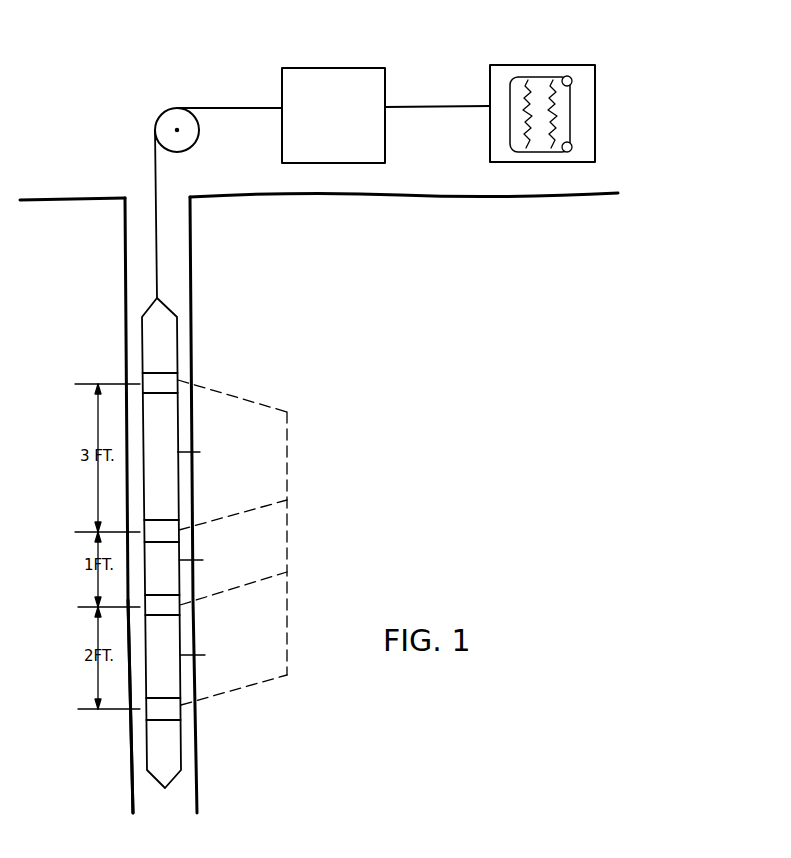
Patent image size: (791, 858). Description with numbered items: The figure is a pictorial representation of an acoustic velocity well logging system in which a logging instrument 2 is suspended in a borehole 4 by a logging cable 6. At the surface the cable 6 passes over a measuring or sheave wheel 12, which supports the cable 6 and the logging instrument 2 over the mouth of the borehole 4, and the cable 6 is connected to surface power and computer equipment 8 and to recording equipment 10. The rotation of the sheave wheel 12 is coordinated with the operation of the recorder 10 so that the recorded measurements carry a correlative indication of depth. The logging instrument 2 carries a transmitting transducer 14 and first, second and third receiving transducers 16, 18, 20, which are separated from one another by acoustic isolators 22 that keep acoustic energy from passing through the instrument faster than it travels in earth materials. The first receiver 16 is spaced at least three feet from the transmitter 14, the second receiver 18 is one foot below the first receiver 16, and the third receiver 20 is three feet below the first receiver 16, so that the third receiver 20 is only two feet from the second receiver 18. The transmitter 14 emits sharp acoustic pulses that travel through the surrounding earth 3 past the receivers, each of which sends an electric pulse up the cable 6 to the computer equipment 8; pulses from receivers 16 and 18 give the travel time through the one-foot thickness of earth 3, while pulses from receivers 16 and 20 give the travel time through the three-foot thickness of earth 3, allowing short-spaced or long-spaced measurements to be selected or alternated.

The logging instrument 2 is at (180, 434).
The earth 3 is at (326, 484).
The borehole 4 is at (177, 295).
The logging cable 6 is at (157, 192).
The surface power and computer equipment 8 is at (385, 97).
The recording equipment 10 is at (595, 100).
The sheave wheel 12 is at (197, 142).
The transmitting transducer 14 is at (178, 384).
The first receiving transducer 16 is at (179, 532).
The second receiving transducer 18 is at (180, 606).
The third receiving transducer 20 is at (181, 710).
The insulating section 22 is at (207, 655).